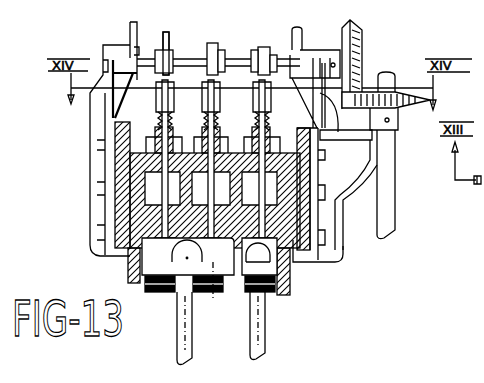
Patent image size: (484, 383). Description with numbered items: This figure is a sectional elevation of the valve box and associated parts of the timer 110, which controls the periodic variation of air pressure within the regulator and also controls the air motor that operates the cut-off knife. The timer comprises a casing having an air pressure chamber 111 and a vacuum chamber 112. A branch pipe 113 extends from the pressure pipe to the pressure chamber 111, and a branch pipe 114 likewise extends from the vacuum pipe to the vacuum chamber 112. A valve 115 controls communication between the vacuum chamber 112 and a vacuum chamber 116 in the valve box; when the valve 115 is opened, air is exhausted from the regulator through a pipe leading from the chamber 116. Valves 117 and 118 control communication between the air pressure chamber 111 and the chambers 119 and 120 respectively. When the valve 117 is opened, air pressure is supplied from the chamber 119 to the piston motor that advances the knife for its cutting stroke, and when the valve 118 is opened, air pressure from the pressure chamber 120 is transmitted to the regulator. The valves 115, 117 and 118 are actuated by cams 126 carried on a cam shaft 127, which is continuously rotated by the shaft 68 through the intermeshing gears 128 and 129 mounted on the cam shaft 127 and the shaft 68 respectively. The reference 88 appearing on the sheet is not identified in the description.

The valve mechanism 88 is at (69, 12).
The cams 126 is at (274, 50).
The cam shaft 127 is at (280, 48).
The gear 128 is at (352, 32).
The gear 129 is at (398, 92).
The shaft 68 is at (390, 202).
The chamber 120 is at (148, 177).
The chamber 119 is at (282, 208).
The valve 118 is at (134, 258).
The air pressure chamber 111 is at (142, 292).
The valve 115 is at (278, 252).
The vacuum chamber 112 is at (276, 284).
The valve 117 is at (217, 294).
The branch pipe 113 is at (177, 354).
The branch pipe 114 is at (263, 349).
The timer 110 is at (333, 253).
The vacuum chamber 116 is at (282, 210).